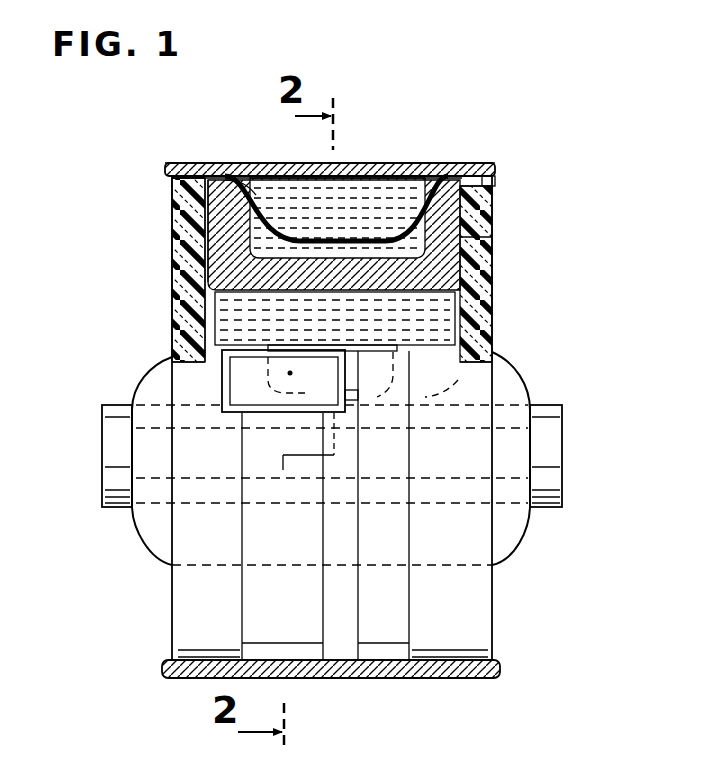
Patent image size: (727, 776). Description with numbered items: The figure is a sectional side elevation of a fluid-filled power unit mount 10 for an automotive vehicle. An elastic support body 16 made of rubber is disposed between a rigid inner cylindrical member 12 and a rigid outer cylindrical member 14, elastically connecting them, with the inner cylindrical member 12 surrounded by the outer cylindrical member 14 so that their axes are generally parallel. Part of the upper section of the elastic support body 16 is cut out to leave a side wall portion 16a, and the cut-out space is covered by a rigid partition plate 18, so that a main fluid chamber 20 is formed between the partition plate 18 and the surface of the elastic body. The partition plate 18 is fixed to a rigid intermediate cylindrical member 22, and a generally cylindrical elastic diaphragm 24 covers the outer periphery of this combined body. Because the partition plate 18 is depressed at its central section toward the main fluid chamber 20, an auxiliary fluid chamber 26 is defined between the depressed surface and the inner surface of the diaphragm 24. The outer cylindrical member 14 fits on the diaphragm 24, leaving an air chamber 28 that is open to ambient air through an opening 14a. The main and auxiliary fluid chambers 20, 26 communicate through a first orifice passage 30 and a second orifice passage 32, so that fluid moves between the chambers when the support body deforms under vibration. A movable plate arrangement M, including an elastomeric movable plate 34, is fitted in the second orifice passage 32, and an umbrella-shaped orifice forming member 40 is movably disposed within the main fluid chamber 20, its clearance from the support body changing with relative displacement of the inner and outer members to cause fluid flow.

The power unit mount 10 is at (452, 118).
The inner cylindrical member 12 is at (563, 416).
The outer cylindrical member 14 is at (450, 164).
The opening 14a is at (350, 165).
The elastic support body 16 is at (488, 206).
The side wall portion 16a is at (172, 216).
The partition plate 18 is at (215, 262).
The main fluid chamber 20 is at (492, 304).
The intermediate cylindrical member 22 is at (482, 603).
The elastic diaphragm 24 is at (390, 165).
The auxiliary fluid chamber 26 is at (492, 232).
The air chamber 28 is at (287, 200).
The first orifice passage 30 is at (392, 632).
The second orifice passage 32 is at (313, 653).
The movable plate 34 is at (237, 374).
The movable plate arrangement M is at (218, 396).
The orifice forming member 40 is at (386, 337).